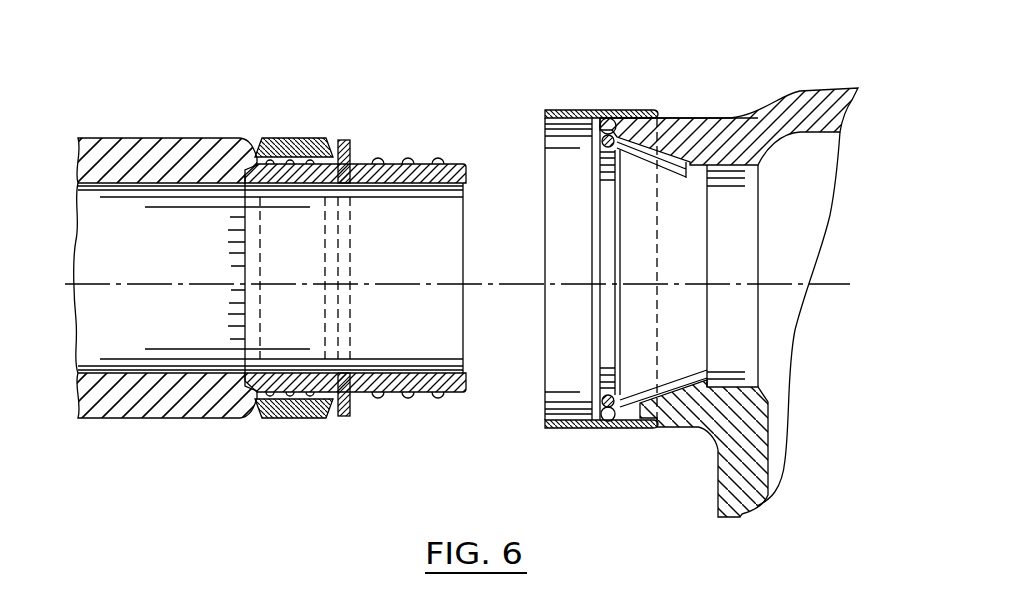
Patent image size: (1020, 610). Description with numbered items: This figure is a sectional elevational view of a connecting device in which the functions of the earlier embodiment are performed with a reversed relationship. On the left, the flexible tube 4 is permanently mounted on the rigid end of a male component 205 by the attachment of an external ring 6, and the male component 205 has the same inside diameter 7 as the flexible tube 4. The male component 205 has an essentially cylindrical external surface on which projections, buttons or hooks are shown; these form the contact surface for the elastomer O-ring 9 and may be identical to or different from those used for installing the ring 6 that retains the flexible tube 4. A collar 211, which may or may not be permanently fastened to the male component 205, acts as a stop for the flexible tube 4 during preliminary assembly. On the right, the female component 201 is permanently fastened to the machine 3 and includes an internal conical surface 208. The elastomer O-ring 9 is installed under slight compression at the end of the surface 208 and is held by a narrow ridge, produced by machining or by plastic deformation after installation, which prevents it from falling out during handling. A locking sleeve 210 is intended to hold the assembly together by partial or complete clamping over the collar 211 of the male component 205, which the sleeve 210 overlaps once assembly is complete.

The machine 3 is at (815, 104).
The flexible tube 4 is at (162, 158).
The external ring 6 is at (297, 140).
The inside diameter 7 is at (412, 190).
The elastomer O-ring 9 is at (608, 117).
The female component 201 is at (678, 128).
The male component 205 is at (394, 165).
The internal conical surface 208 is at (688, 168).
The locking sleeve 210 is at (578, 430).
The collar 211 is at (341, 414).